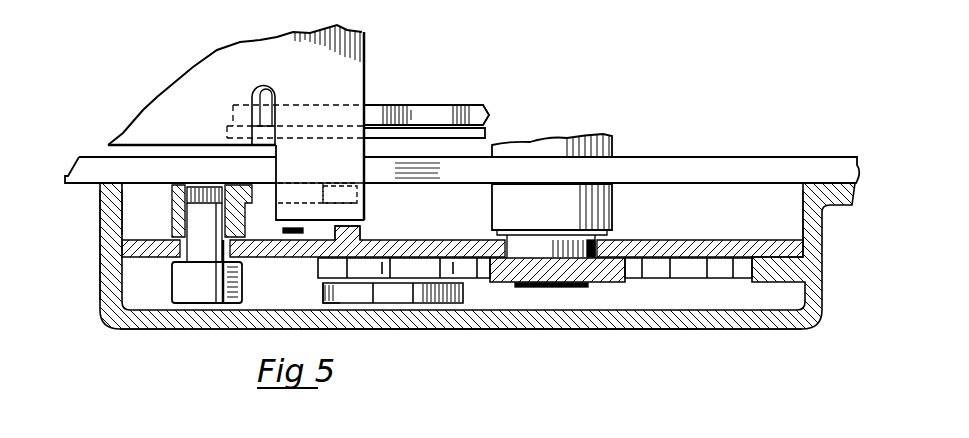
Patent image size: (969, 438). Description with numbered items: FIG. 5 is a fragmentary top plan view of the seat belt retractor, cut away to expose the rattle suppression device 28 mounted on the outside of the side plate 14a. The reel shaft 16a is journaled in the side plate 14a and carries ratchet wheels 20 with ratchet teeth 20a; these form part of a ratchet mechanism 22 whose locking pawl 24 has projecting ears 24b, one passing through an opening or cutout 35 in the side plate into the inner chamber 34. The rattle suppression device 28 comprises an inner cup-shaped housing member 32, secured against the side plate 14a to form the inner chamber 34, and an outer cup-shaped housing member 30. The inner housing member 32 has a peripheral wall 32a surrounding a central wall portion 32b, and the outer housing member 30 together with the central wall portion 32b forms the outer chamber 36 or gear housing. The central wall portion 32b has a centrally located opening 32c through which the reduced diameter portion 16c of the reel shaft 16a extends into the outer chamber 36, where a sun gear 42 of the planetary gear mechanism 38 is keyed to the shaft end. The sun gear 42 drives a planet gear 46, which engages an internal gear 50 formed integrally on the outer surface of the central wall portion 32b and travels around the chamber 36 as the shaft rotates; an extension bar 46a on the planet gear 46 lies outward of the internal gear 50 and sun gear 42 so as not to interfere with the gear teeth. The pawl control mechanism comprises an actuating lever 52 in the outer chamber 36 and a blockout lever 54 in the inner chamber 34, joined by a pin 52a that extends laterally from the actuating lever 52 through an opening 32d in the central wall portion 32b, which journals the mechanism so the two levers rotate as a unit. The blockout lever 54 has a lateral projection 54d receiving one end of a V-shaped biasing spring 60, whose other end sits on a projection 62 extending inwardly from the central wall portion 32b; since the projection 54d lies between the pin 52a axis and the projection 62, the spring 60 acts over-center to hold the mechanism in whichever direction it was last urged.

The side plate 14a is at (705, 162).
The reel shaft 16a is at (612, 143).
The reduced diameter portion 16c is at (528, 243).
The ratchet wheels 20 is at (410, 117).
The ratchet teeth 20a is at (470, 104).
The ratchet mechanism 22 is at (382, 65).
The locking pawl 24 is at (367, 47).
The ears 24b is at (366, 199).
The rattle suppression device 28 is at (522, 340).
The outer cup-shaped housing member 30 is at (675, 330).
The inner cup-shaped housing member 32 is at (825, 238).
The peripheral wall 32a is at (100, 226).
The central wall portion 32b is at (683, 239).
The centrally located opening 32c is at (580, 250).
The opening 32d is at (189, 252).
The inner chamber 34 is at (668, 224).
The opening or cutout 35 is at (277, 171).
The outer chamber 36 is at (653, 302).
The planetary gear mechanism 38 is at (746, 292).
The sun gear 42 is at (600, 283).
The planet gear 46 is at (427, 304).
The extension bar 46a is at (323, 293).
The internal gear 50 is at (723, 268).
The actuating lever 52 is at (172, 293).
The pin 52a is at (193, 190).
The blockout lever 54 is at (172, 207).
The lateral projection 54d is at (288, 234).
The biasing spring 60 is at (327, 186).
The projection 62 is at (358, 230).